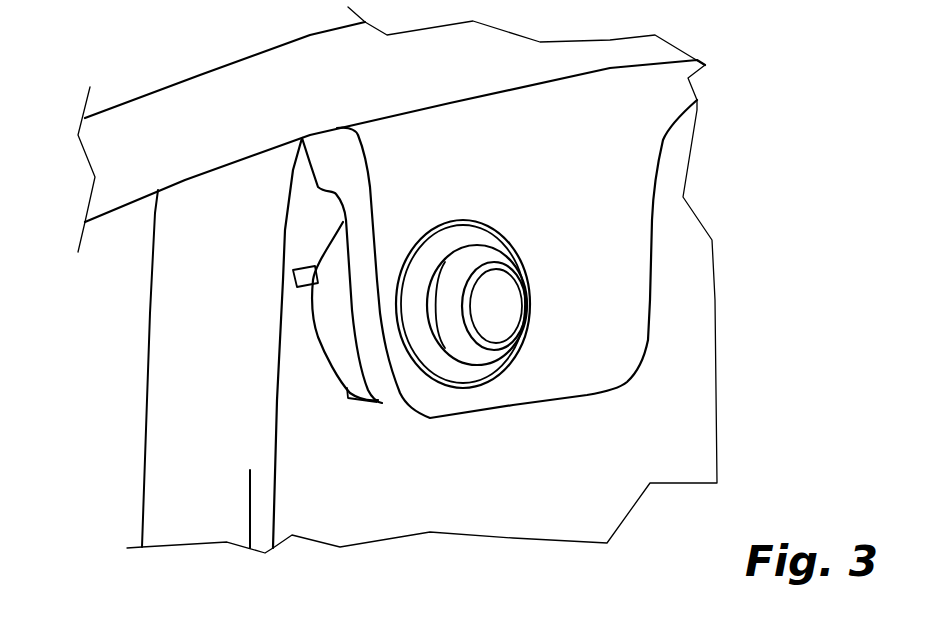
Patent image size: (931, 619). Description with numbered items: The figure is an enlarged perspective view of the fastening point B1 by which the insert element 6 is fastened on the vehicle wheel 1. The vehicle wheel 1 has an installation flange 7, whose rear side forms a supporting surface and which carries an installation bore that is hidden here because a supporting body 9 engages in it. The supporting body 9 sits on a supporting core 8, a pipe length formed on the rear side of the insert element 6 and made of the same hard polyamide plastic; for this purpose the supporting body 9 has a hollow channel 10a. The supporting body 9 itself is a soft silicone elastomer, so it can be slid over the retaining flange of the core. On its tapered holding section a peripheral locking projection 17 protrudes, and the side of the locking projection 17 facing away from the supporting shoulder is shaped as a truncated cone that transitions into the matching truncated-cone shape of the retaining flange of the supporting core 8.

The vehicle wheel 1 is at (196, 82).
The insert element 6 is at (461, 491).
The installation flange 7 is at (593, 223).
The supporting core 8 is at (500, 263).
The supporting body 9 is at (326, 323).
The hollow channel 10a is at (488, 304).
The locking projection 17 is at (445, 236).
The fastening point B1 is at (552, 331).